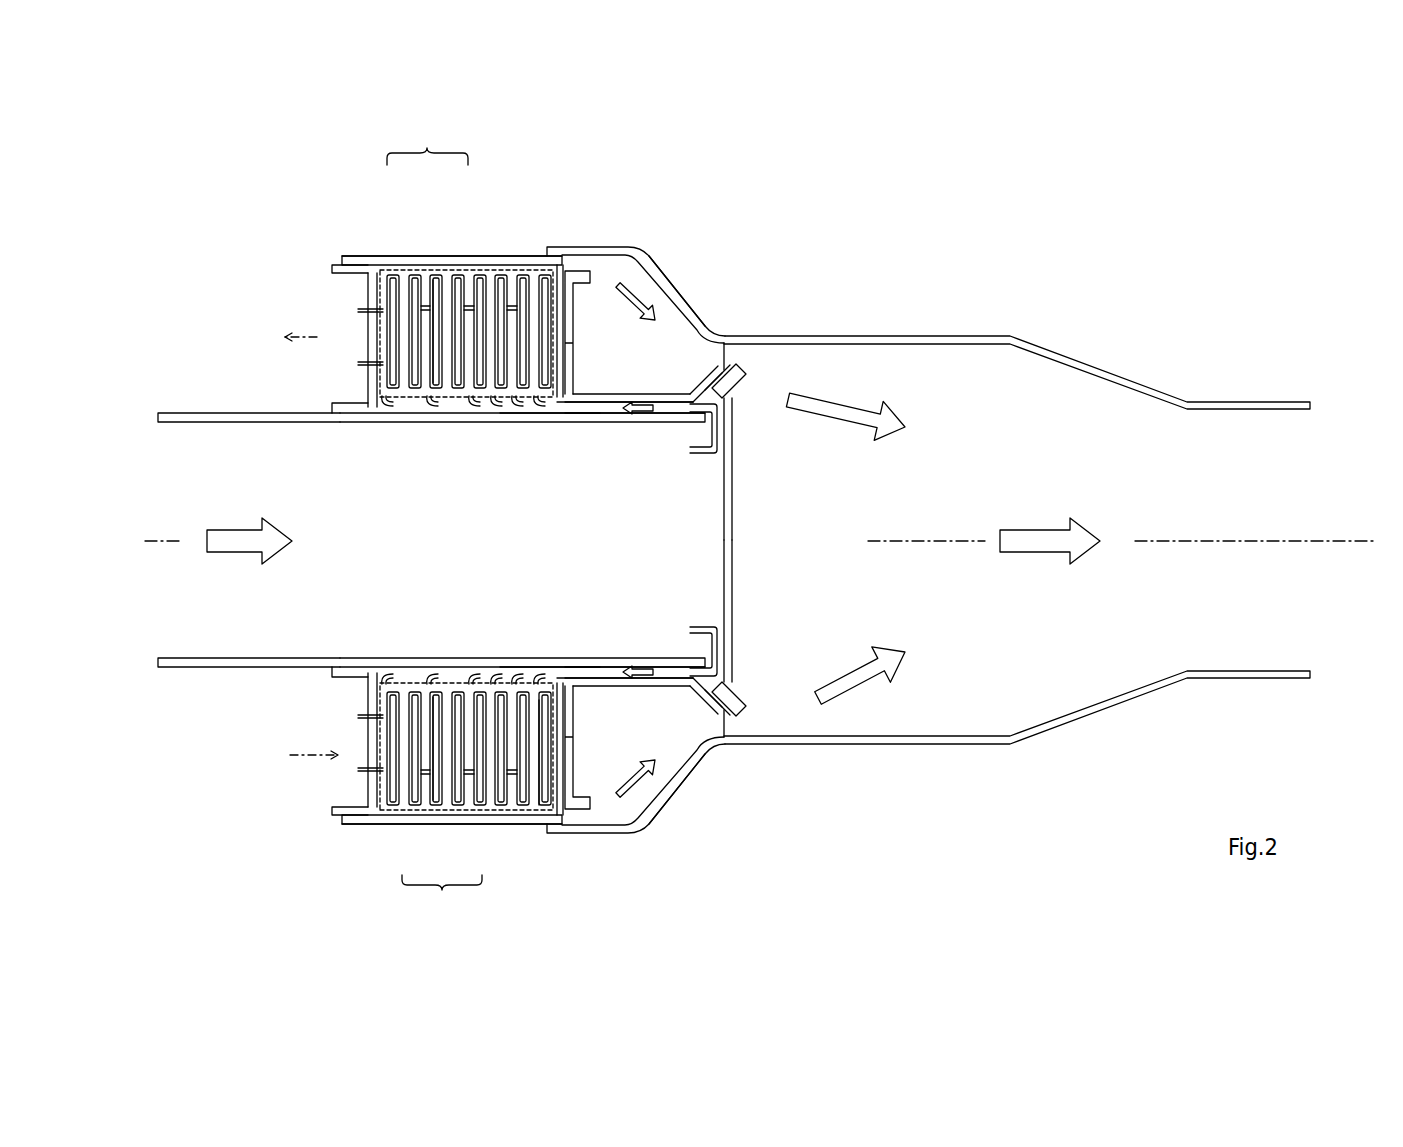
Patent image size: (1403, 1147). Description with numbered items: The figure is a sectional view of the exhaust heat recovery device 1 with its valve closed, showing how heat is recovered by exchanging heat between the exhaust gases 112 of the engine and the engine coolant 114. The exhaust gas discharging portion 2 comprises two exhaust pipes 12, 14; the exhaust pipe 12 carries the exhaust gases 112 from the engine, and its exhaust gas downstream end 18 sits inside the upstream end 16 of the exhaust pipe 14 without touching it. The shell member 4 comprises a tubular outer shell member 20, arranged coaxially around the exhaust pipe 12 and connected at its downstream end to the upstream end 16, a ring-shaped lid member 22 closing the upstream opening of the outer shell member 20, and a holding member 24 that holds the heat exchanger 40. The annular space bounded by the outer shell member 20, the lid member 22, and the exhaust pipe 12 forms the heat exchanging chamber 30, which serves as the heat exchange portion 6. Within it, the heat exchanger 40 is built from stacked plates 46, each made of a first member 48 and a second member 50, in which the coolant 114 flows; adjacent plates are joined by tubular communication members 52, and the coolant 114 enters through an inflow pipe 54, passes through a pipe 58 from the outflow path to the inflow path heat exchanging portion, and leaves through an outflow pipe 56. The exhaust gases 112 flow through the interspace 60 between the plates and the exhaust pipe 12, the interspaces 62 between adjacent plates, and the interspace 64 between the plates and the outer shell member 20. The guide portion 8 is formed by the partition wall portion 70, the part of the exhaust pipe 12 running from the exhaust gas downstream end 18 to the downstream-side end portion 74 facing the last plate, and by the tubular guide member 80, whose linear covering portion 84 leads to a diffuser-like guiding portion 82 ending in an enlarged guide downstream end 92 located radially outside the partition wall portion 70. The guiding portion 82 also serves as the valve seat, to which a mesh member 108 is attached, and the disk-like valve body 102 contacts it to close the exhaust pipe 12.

The exhaust heat recovery device 1 is at (760, 336).
The exhaust gas discharging portion 2 is at (198, 743).
The shell member 4 is at (422, 533).
The heat exchange portion 6 is at (401, 535).
The guide portion 8 is at (522, 543).
The exhaust pipe 12 is at (197, 413).
The exhaust pipe 14 is at (972, 336).
The upstream end 16 is at (636, 531).
The exhaust gas downstream end 18 is at (680, 540).
The outer shell member 20 is at (390, 258).
The lid member 22 is at (368, 288).
The holding member 24 is at (577, 258).
The heat exchanging chamber 30 is at (316, 551).
The heat exchanger 40 is at (547, 247).
The plates 46 is at (434, 517).
The first member 48 is at (430, 258).
The second member 50 is at (442, 258).
The communication member 52 is at (515, 258).
The inflow pipe 54 is at (370, 731).
The outflow pipe 56 is at (365, 335).
The pipe 58 is at (553, 720).
The interspace 60 is at (463, 540).
The interspace 62 is at (447, 540).
The interspace 64 is at (479, 547).
The partition wall portion 70 is at (625, 422).
The downstream-side end portion 74 is at (550, 540).
The guide member 80 is at (625, 548).
The guiding portion 82 is at (708, 541).
The covering portion 84 is at (590, 392).
The guide downstream end 92 is at (744, 531).
The valve body 102 is at (733, 533).
The mesh member 108 is at (745, 376).
The exhaust gases 112 is at (653, 540).
The coolant 114 is at (308, 531).